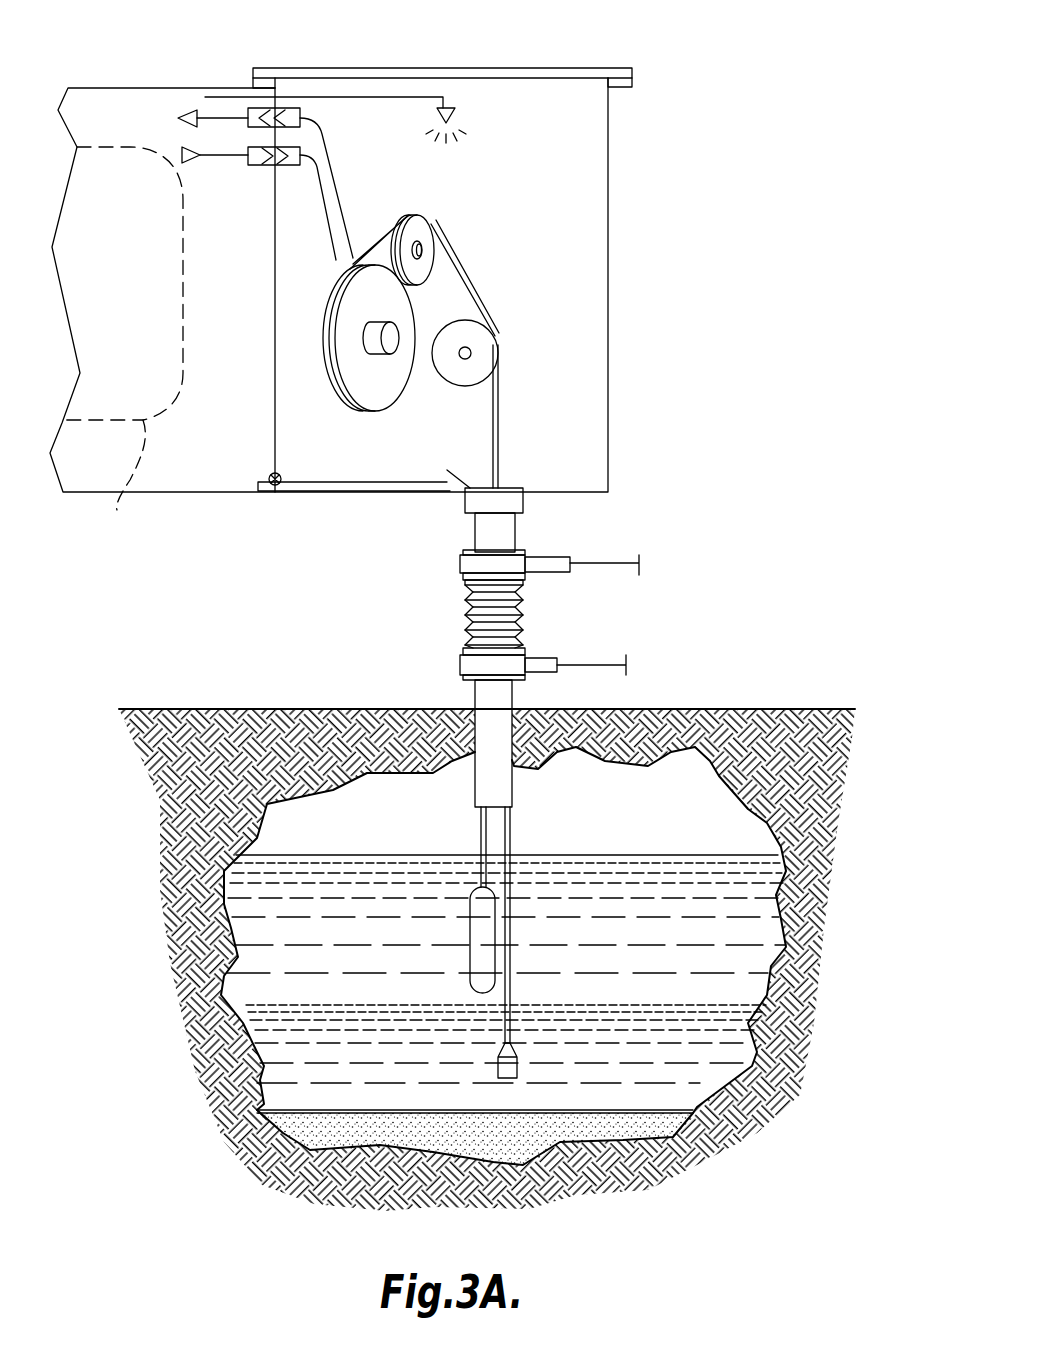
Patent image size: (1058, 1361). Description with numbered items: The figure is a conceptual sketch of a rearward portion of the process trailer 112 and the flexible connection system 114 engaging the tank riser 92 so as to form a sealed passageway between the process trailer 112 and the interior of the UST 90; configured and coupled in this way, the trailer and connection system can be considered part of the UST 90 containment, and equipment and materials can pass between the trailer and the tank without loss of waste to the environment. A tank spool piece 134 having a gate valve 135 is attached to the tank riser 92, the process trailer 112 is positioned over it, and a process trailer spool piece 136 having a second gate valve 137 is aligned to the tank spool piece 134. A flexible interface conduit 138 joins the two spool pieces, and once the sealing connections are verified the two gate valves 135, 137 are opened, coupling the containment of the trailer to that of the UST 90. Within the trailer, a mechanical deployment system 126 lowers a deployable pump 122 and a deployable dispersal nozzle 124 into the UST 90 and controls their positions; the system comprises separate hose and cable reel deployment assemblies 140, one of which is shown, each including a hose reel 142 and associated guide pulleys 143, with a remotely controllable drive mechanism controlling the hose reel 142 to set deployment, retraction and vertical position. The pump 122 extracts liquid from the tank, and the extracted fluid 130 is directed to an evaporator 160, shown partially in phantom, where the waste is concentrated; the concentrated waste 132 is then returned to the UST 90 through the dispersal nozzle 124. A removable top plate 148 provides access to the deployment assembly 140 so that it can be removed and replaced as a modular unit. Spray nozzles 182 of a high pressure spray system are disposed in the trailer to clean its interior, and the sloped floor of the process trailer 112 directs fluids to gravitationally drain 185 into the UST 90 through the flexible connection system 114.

The UST 90 is at (674, 769).
The tank riser 92 is at (513, 693).
The process trailer 112 is at (614, 163).
The flexible connection system 114 is at (573, 584).
The pump 122 is at (476, 988).
The dispersal nozzle 124 is at (511, 1072).
The mechanical deployment system 126 is at (542, 362).
The extracted fluid 130 is at (212, 116).
The concentrated waste 132 is at (204, 153).
The tank spool piece 134 is at (462, 680).
The gate valve 135 is at (613, 665).
The process trailer spool piece 136 is at (460, 575).
The second gate valve 137 is at (613, 563).
The flexible interface conduit 138 is at (523, 605).
The hose and cable reel deployment assembly 140 is at (500, 339).
The hose reel 142 is at (360, 398).
The guide pulleys 143 is at (427, 223).
The removable top plate 148 is at (370, 74).
The evaporator 160 is at (117, 510).
The spray nozzles 182 is at (456, 118).
The drain 185 is at (302, 477).